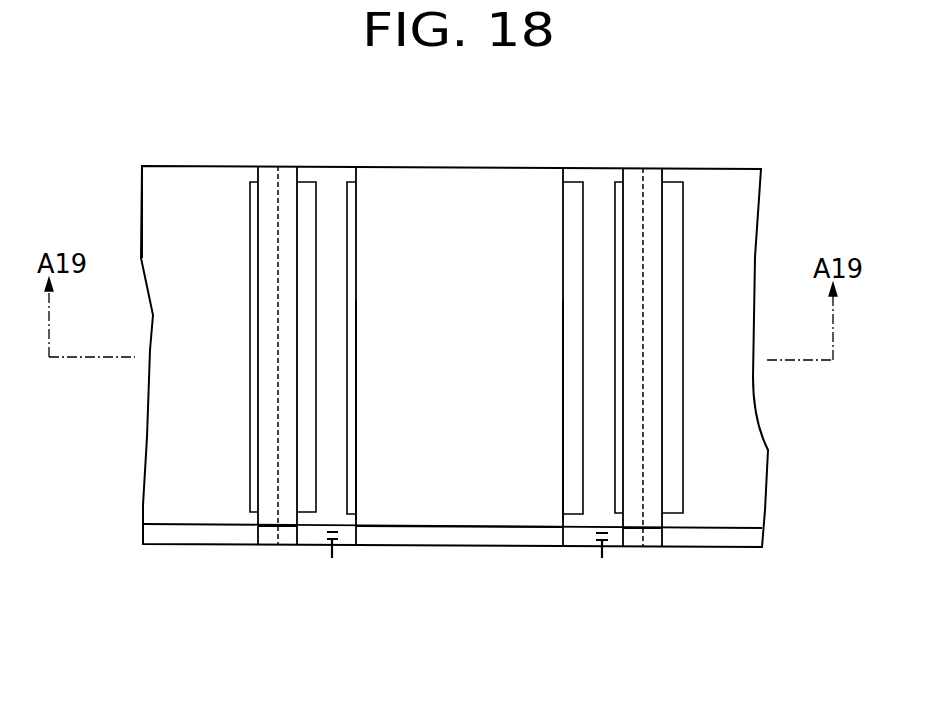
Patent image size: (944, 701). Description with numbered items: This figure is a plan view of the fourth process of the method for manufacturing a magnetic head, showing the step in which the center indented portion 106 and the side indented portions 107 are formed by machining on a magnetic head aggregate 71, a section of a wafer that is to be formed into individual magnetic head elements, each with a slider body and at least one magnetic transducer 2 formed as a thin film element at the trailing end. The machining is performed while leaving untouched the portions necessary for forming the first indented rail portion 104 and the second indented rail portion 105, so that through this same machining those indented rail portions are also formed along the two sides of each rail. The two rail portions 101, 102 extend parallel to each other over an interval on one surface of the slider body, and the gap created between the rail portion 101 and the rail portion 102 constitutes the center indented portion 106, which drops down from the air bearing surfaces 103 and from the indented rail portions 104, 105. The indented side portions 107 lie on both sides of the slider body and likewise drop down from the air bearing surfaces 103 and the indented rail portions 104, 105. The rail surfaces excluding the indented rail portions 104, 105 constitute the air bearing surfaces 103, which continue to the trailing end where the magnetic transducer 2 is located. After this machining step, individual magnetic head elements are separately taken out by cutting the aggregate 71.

The magnetic transducer 2 is at (332, 558).
The magnetic head aggregate 71 is at (155, 455).
The rail portion 101 is at (357, 460).
The rail portion 102 is at (562, 468).
The air bearing surface 103 is at (330, 288).
The first indented rail portion 104 is at (310, 198).
The second indented rail portion 105 is at (357, 190).
The center indented portion 106 is at (462, 513).
The indented side portion 107 is at (283, 513).